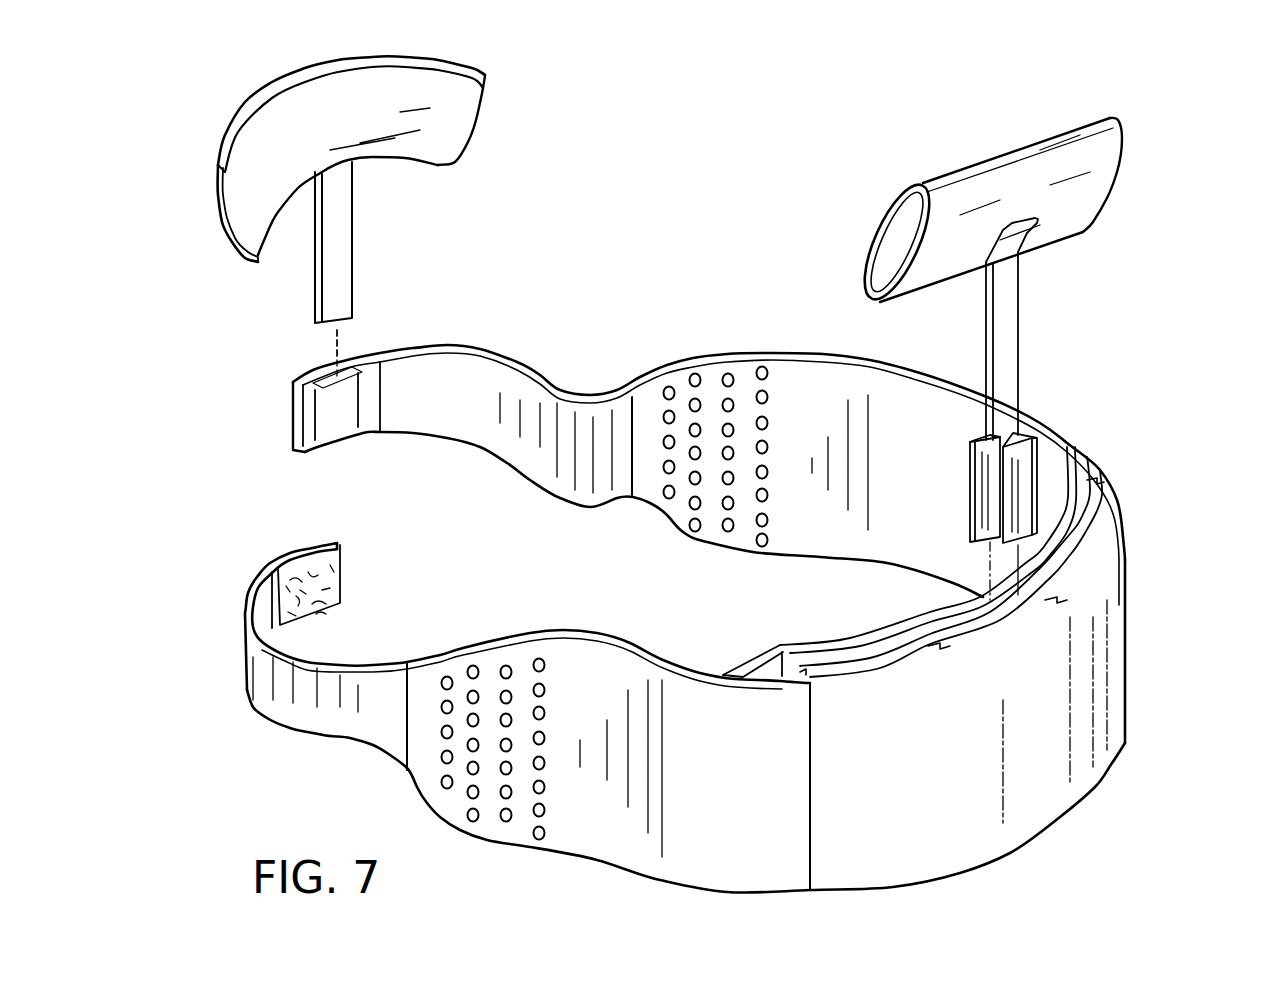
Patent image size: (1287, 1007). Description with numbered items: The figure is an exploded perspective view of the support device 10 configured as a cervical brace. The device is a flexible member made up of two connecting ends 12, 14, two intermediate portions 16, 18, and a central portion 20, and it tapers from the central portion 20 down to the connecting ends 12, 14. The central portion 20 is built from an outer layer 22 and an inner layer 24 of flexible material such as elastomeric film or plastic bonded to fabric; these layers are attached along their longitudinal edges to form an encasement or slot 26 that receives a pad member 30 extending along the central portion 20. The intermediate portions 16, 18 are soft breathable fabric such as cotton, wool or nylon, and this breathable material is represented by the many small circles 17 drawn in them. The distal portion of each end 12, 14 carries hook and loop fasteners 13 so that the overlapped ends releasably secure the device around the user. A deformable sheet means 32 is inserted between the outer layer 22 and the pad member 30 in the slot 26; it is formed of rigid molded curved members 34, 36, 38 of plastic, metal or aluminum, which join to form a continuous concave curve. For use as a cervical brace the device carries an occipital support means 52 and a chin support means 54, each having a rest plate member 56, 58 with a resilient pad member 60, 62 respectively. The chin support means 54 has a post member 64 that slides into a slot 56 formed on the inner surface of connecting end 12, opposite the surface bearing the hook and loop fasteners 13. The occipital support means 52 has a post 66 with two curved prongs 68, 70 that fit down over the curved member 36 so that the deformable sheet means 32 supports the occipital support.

The support device 10 is at (1185, 511).
The connecting end 12 is at (463, 370).
The hook and loop fasteners 13 is at (330, 570).
The connecting end 14 is at (303, 713).
The intermediate portion 16 is at (827, 383).
The circles 17 is at (693, 380).
The intermediate portion 18 is at (637, 830).
The central portion 20 is at (1082, 822).
The outer layer 22 is at (967, 857).
The inner layer 24 is at (828, 635).
The slot 26 is at (1093, 457).
The pad member 30 is at (1087, 520).
The deformable sheet means 32 is at (1117, 541).
The curved member 34 is at (1087, 560).
The curved member 36 is at (980, 637).
The curved member 38 is at (877, 660).
The occipital support means 52 is at (1142, 130).
The chin support means 54 is at (202, 134).
The rest plate member 56 is at (345, 355).
The rest plate member 58 is at (433, 64).
The resilient pad member 60 is at (900, 223).
The resilient pad member 62 is at (433, 133).
The post member 64 is at (338, 228).
The post 66 is at (1012, 322).
The curved prong 68 is at (1027, 463).
The curved prong 70 is at (968, 473).